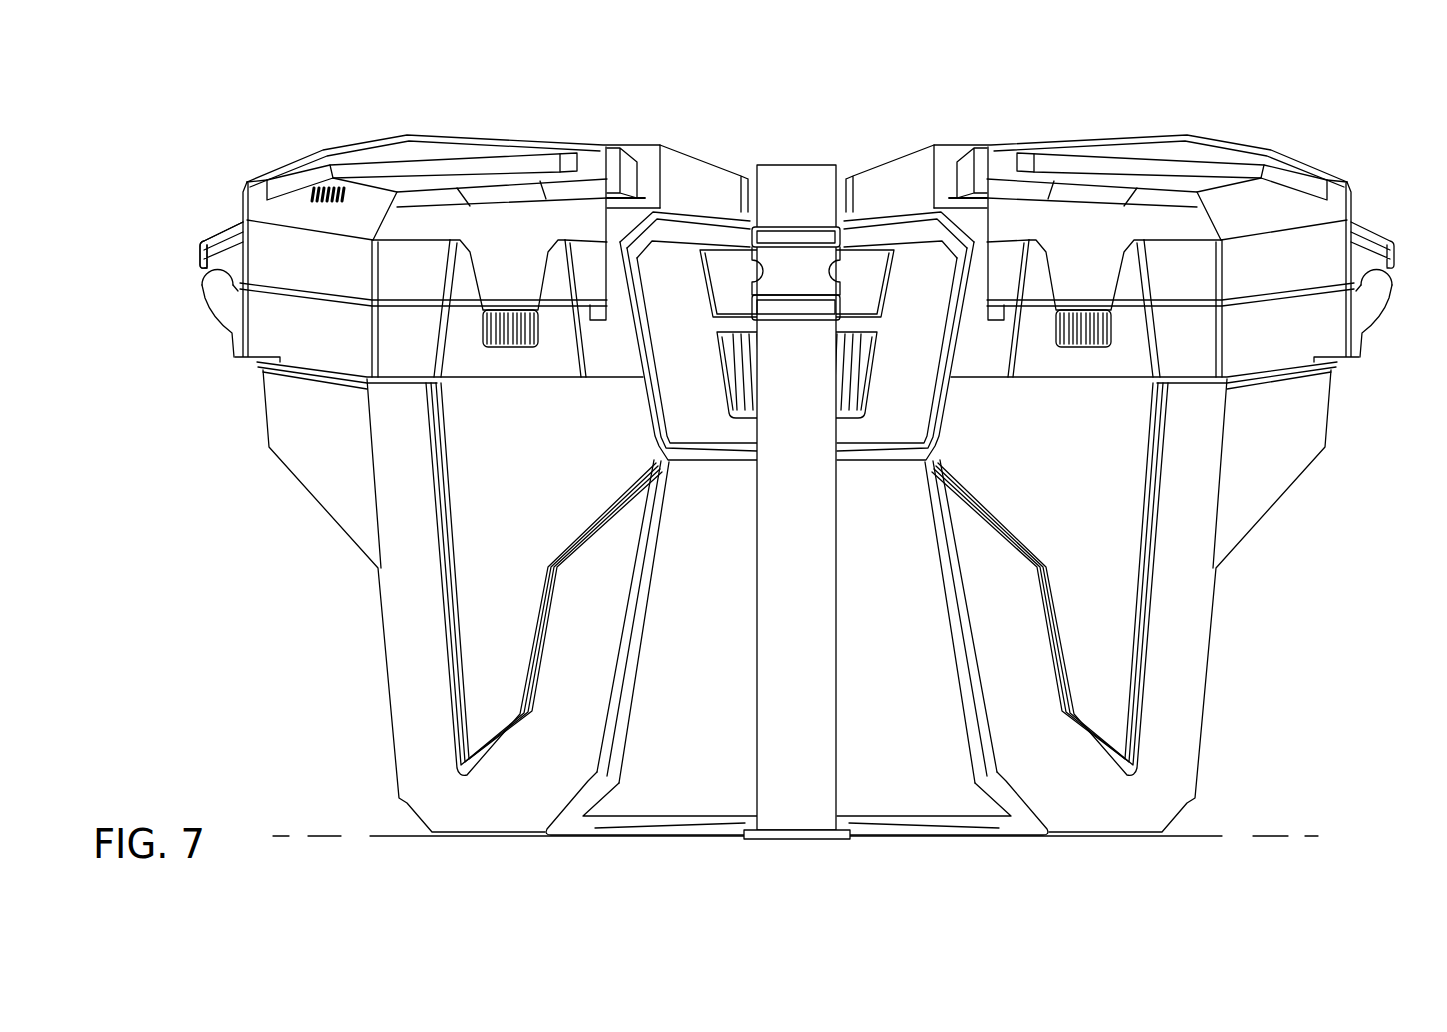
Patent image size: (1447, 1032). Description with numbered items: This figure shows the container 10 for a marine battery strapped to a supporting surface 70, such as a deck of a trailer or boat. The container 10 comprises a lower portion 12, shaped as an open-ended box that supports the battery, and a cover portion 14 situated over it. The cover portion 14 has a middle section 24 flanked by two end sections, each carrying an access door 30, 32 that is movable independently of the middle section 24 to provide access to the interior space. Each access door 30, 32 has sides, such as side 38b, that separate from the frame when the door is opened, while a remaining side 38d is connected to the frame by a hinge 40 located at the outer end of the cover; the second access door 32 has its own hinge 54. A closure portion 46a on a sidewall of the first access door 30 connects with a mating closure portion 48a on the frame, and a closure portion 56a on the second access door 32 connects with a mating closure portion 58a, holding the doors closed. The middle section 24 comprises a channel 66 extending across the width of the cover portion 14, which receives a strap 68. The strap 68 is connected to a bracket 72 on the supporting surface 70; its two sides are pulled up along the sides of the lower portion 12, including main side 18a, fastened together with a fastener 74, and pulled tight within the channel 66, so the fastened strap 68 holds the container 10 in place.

The container 10 is at (790, 474).
The lower portion 12 is at (1168, 711).
The cover portion 14 is at (270, 176).
The main side 18a is at (694, 768).
The middle section 24 is at (890, 140).
The access door 30 is at (397, 158).
The access door 32 is at (1108, 158).
The side 38b is at (609, 150).
The remaining side 38d is at (213, 201).
The hinge 40 is at (192, 292).
The closure portion 46a is at (506, 360).
The mating closure portion 48a is at (489, 338).
The hinge 54 is at (1398, 300).
The closure portion 56a is at (1091, 360).
The mating closure portion 58a is at (1068, 338).
The channel 66 is at (754, 166).
The strap 68 is at (814, 712).
The supporting surface 70 is at (1183, 843).
The bracket 72 is at (803, 839).
The fastener 74 is at (793, 258).